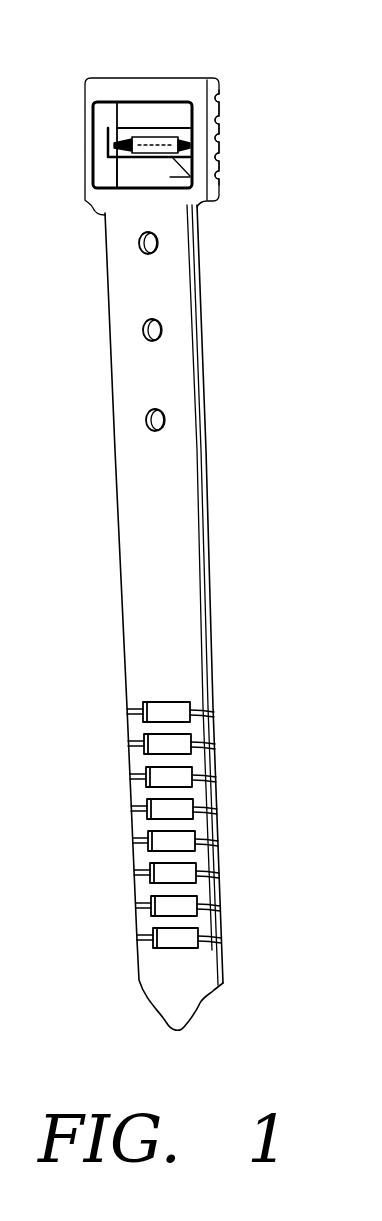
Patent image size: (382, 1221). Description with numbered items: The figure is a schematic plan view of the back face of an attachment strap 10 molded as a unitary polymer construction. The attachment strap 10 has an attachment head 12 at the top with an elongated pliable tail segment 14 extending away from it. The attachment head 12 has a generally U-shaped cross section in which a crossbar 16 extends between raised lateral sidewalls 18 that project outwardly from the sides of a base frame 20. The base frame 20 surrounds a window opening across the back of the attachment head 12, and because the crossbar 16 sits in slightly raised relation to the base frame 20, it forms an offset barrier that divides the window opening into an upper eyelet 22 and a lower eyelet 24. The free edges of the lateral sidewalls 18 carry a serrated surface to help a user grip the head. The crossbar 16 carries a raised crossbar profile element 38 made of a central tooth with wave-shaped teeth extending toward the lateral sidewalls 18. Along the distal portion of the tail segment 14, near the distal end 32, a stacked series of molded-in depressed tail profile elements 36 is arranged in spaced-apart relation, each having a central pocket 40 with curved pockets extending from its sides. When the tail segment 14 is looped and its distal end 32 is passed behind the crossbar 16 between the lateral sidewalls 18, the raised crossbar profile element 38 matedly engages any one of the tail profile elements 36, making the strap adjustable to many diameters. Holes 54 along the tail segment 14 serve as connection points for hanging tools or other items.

The attachment strap 10 is at (178, 533).
The attachment head 12 is at (178, 72).
The tail segment 14 is at (214, 503).
The crossbar 16 is at (196, 180).
The lateral sidewalls 18 is at (213, 128).
The base frame 20 is at (110, 90).
The upper eyelet 22 is at (145, 118).
The lower eyelet 24 is at (151, 171).
The distal end 32 is at (160, 973).
The depressed tail profile elements 36 is at (186, 694).
The raised crossbar profile element 38 is at (110, 178).
The central pocket 40 is at (180, 740).
The holes 54 is at (137, 340).